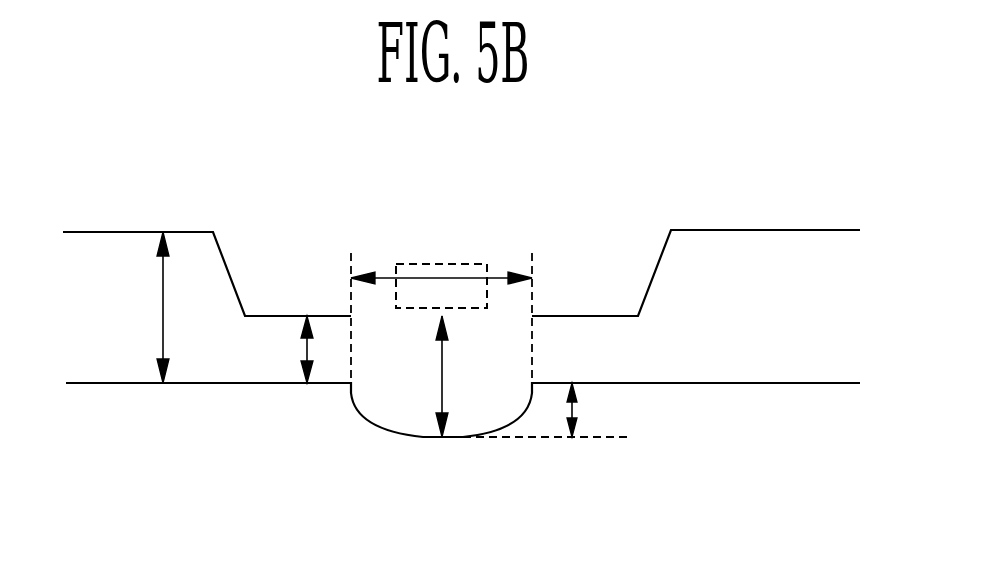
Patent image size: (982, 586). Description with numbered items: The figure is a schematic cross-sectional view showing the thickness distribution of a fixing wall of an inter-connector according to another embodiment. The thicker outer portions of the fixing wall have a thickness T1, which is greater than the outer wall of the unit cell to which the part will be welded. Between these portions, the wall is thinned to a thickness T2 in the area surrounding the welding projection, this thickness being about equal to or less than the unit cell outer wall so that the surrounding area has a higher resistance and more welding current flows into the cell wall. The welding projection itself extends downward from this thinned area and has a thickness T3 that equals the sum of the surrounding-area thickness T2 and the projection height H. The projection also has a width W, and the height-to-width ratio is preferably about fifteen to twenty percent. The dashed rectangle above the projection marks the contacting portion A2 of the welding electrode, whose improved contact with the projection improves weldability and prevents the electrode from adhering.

The thickness of a portion of the fixing wall T1 is at (149, 307).
The thickness of the welding projection surrounding area T2 is at (286, 349).
The thickness of the welding projection T3 is at (456, 376).
The width of the welding projection W is at (441, 258).
The height of the welding projection H is at (587, 410).
The contacting portion of the welding electrode A2 is at (443, 263).